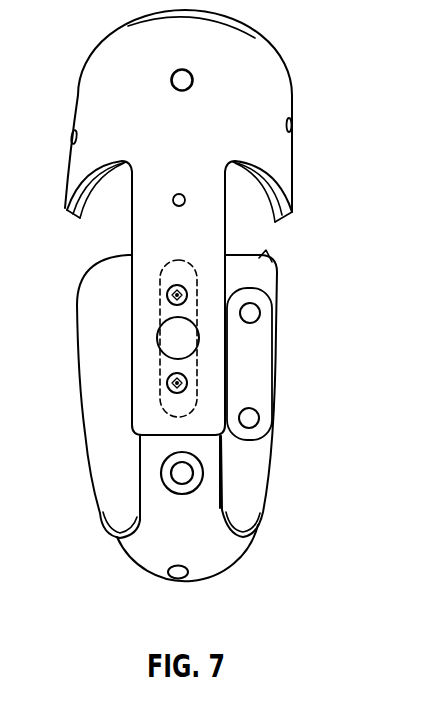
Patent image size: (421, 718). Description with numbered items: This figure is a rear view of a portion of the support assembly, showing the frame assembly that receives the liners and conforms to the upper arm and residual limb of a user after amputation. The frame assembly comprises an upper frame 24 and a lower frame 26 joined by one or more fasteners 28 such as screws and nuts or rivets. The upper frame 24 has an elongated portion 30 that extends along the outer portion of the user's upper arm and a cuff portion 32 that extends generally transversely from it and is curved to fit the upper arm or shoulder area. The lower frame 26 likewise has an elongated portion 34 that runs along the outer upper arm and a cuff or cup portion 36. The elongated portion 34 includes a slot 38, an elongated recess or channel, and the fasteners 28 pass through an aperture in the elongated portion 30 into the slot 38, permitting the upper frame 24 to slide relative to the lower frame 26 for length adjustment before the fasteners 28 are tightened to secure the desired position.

The upper frame 24 is at (265, 93).
The cuff portion 32 is at (282, 145).
The elongated portion 30 is at (212, 223).
The fasteners 28 is at (167, 295).
The slot 38 is at (195, 372).
The elongated portion 34 is at (138, 485).
The lower frame 26 is at (193, 508).
The cuff or cup portion 36 is at (207, 562).